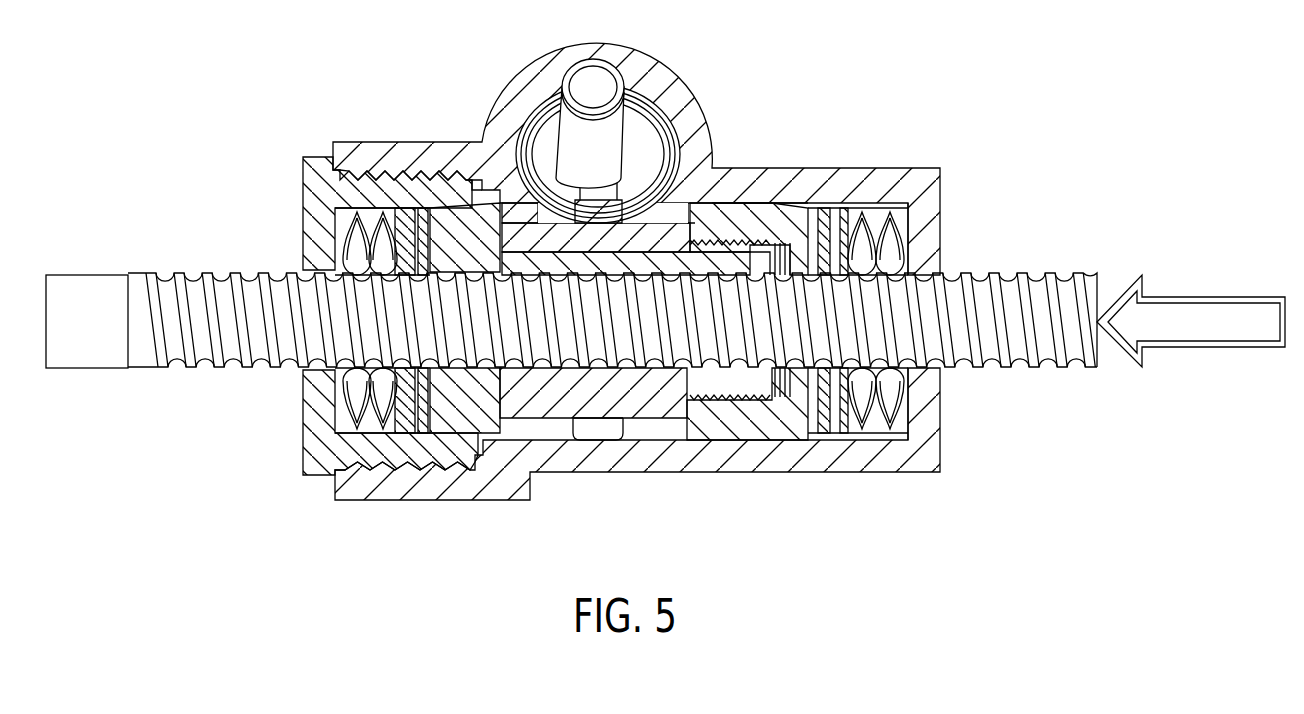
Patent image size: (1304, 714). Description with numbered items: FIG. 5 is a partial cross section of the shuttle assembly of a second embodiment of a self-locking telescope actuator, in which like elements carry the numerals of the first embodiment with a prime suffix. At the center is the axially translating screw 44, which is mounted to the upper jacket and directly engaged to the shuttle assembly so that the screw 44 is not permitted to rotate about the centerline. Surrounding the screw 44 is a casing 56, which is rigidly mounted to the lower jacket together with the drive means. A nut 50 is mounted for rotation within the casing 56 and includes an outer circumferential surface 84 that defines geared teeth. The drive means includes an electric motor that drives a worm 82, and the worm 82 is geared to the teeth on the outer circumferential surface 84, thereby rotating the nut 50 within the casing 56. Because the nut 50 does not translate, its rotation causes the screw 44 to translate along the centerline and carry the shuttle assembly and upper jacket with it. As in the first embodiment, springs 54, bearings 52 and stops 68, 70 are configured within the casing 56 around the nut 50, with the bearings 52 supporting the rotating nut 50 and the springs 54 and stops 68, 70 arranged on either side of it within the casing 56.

The screw 44 is at (175, 272).
The springs 54 is at (360, 200).
The bearings 52 is at (400, 200).
The stop 68 is at (457, 194).
The worm 82 is at (632, 182).
The casing 56 is at (750, 167).
The stop 70 is at (796, 198).
The outer circumferential surface 84 is at (603, 446).
The nut 50 is at (447, 443).